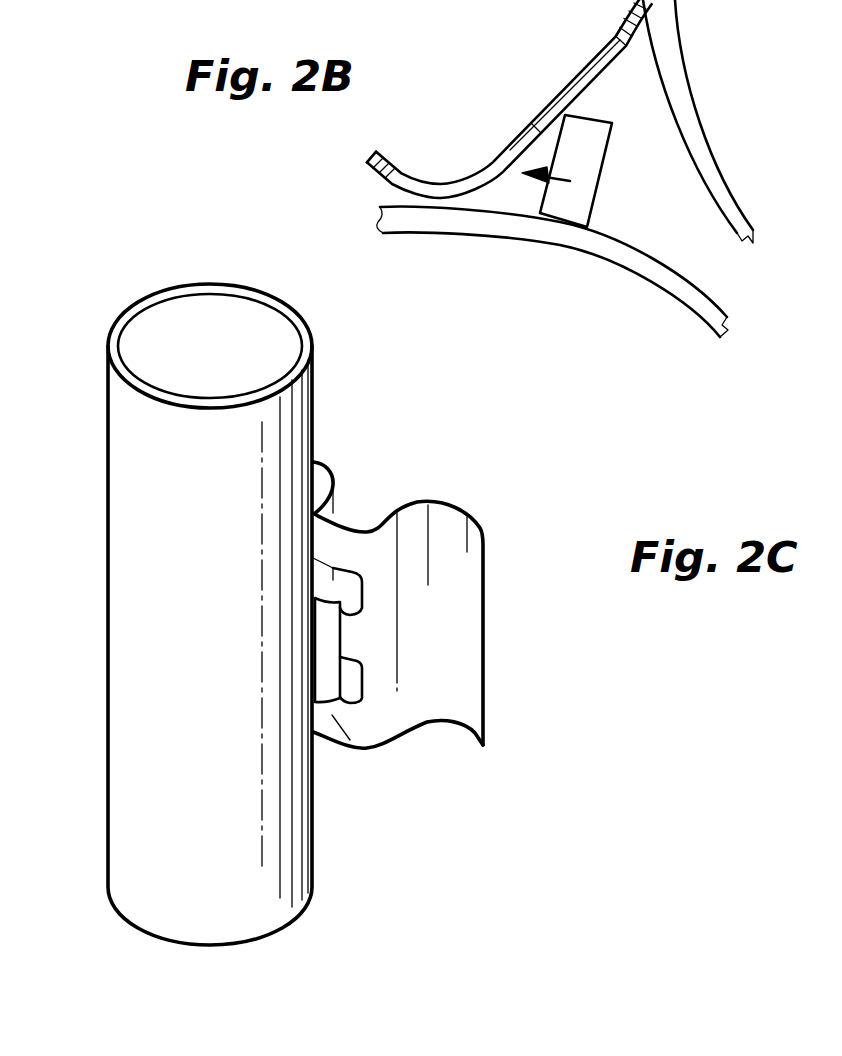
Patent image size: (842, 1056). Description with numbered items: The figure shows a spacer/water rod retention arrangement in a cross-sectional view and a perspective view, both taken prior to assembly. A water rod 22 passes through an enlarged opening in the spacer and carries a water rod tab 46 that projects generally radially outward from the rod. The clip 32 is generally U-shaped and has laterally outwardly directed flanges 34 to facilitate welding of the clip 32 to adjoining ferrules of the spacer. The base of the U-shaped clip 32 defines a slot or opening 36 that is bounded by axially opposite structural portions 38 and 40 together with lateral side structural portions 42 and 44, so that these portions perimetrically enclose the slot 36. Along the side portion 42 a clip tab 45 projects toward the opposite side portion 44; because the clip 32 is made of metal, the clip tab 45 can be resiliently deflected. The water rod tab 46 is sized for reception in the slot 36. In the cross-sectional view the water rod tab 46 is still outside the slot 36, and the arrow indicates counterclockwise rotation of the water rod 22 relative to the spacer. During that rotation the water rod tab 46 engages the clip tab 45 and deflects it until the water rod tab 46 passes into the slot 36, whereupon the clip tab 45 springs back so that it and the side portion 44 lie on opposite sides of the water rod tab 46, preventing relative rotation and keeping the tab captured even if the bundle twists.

In FIG. 2C, the water rod 22 is at (132, 511).
In FIG. 2C, the clip 32 is at (413, 698).
In FIG. 2C, the laterally outwardly directed flanges 34 is at (480, 516).
In FIG. 2B, the slot 36 is at (463, 178).
In FIG. 2C, the slot 36 is at (349, 580).
In FIG. 2C, the axially opposite structural portion 38 is at (338, 537).
In FIG. 2C, the axially opposite structural portion 40 is at (350, 740).
In FIG. 2C, the side structural portion 42 is at (383, 638).
In FIG. 2B, the side structural portion 44 is at (378, 147).
In FIG. 2B, the clip tab 45 is at (580, 78).
In FIG. 2C, the clip tab 45 is at (362, 630).
In FIG. 2B, the water rod tab 46 is at (583, 165).
In FIG. 2C, the water rod tab 46 is at (330, 659).